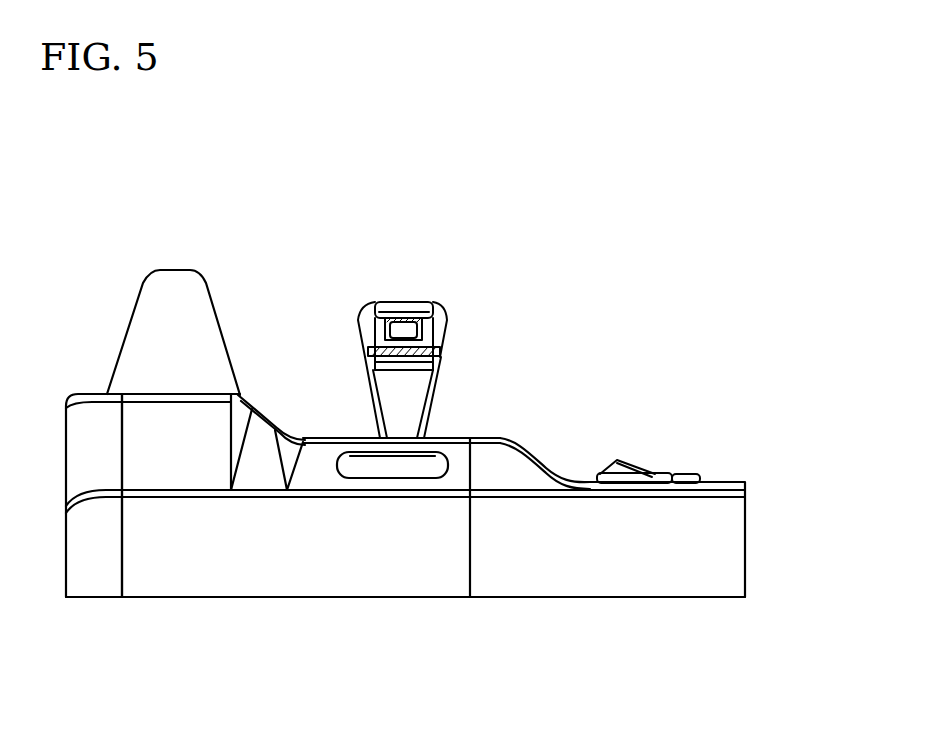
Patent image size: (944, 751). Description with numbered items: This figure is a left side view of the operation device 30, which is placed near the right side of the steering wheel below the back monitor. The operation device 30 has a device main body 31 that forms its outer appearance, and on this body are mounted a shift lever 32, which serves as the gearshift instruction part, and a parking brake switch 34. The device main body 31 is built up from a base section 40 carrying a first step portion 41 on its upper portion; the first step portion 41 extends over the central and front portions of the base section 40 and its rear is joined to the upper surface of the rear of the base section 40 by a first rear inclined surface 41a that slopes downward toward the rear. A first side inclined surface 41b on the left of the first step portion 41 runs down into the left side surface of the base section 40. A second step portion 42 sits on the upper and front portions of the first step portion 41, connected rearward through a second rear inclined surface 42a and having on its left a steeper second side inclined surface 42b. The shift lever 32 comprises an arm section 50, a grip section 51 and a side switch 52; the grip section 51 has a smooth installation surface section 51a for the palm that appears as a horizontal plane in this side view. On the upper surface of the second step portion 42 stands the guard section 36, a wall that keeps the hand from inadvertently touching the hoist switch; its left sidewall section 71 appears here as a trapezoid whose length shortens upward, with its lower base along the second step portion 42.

The operation device 30 is at (745, 153).
The device main body 31 is at (605, 610).
The shift lever 32 is at (441, 295).
The parking brake switch 34 is at (615, 462).
The guard section 36 is at (173, 332).
The base section 40 is at (725, 546).
The first step portion 41 is at (460, 438).
The first rear inclined surface 41a is at (543, 463).
The first side inclined surface 41b is at (455, 477).
The second step portion 42 is at (137, 393).
The second rear inclined surface 42a is at (268, 412).
The second side inclined surface 42b is at (173, 457).
The arm section 50 is at (412, 400).
The grip section 51 is at (438, 329).
The installation surface section 51a is at (405, 299).
The side switch 52 is at (397, 330).
The left sidewall section 71 is at (178, 298).